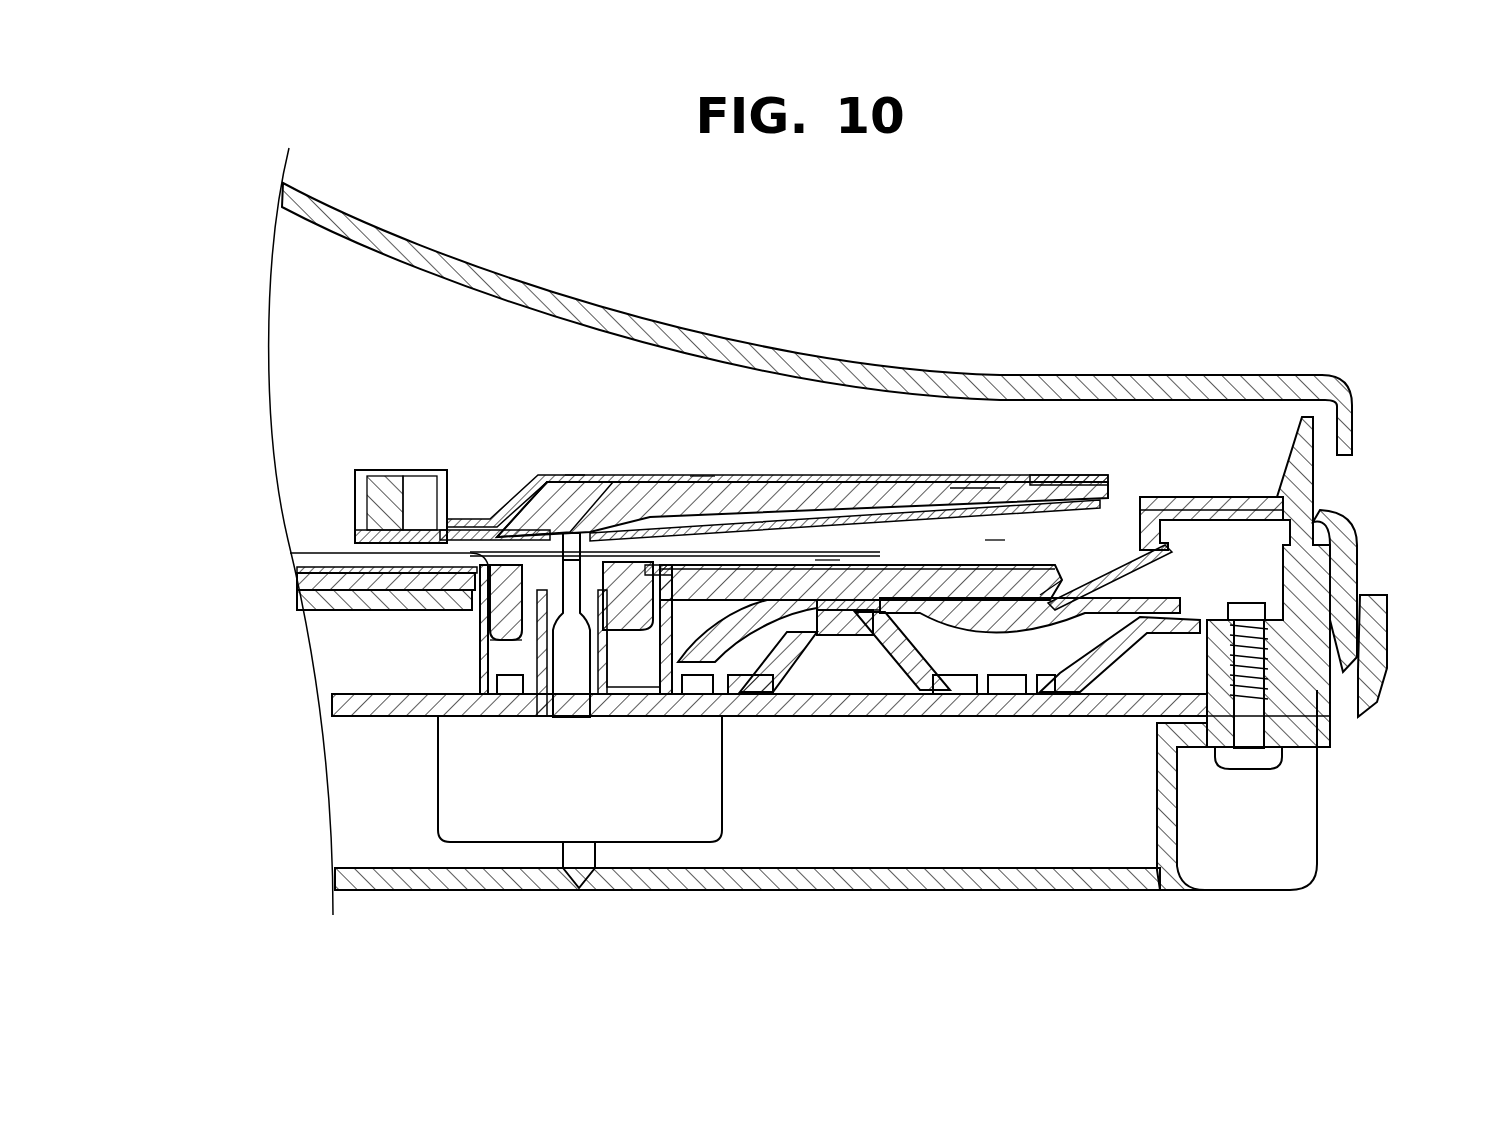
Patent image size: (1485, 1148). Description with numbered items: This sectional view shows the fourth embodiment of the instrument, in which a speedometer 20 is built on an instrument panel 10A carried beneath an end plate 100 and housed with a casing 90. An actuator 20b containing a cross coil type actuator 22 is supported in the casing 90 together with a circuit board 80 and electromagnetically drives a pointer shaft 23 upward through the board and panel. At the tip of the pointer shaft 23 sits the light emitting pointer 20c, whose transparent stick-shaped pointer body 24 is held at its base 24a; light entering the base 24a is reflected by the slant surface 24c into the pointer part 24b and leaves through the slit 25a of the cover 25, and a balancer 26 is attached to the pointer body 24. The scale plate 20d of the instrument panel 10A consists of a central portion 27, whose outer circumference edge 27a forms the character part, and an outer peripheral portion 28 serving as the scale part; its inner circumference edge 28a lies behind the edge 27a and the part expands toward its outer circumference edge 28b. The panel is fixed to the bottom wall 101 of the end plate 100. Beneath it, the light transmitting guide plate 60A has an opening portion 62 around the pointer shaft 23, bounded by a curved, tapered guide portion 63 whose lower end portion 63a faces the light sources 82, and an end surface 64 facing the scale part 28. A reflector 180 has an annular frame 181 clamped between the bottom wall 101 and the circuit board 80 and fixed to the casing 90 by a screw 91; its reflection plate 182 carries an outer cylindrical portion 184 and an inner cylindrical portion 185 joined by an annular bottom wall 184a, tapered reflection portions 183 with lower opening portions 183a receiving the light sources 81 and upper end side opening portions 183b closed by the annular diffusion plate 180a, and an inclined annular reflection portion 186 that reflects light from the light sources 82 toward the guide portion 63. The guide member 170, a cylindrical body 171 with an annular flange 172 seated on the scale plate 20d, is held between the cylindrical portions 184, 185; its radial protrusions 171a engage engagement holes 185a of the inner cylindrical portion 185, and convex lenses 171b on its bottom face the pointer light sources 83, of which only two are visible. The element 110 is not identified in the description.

The housing 110 is at (385, 205).
The light emitting pointer 20c is at (702, 470).
The instrument panel 10A is at (993, 535).
The speedometer 20 is at (575, 470).
The balancer 26 is at (383, 472).
The pointer shaft 23 is at (518, 522).
The slant surface 24c is at (556, 528).
The pointer body 24 is at (770, 497).
The base 24a is at (560, 474).
The pointer part 24b is at (975, 495).
The cover 25 is at (614, 530).
The slit 25a is at (1032, 480).
The engagement holes 185a is at (585, 535).
The annular flange 172 is at (660, 557).
The opening portion 62 is at (540, 557).
The guide plate 60A is at (340, 593).
The reflection plate 182 is at (377, 613).
The cylindrical body 171 is at (487, 647).
The guide member 170 is at (340, 715).
The convex lenses 171b is at (478, 680).
The wall upper portion 171a is at (548, 700).
The outer cylindrical portion 184 is at (507, 690).
The light sources 83 is at (540, 716).
The inner cylindrical portion 185 is at (560, 718).
The annular bottom wall 184a is at (648, 690).
The guide portion 63 is at (785, 660).
The lower end portion 63a is at (713, 650).
The light sources 82 is at (698, 690).
The central portion 27 is at (893, 563).
The outer circumference edge 27a is at (1050, 595).
The scale plate 20d is at (826, 555).
The reflection portions 183 is at (900, 668).
The annular reflection portion 186 is at (790, 665).
The opening portion 183a is at (963, 687).
The upper end side opening portions 183b is at (853, 640).
The annular diffusion plate 180a is at (950, 625).
The light sources 81 is at (1013, 694).
The end surface 64 is at (1047, 625).
The circuit board 80 is at (1110, 727).
The outer peripheral portion 28 is at (1132, 543).
The outer circumference edge 28b is at (1140, 540).
The inner circumference edge 28a is at (1062, 600).
The end plate 100 is at (1325, 500).
The bottom wall 101 is at (1235, 497).
The annular frame 181 is at (1277, 648).
The reflector 180 is at (1142, 665).
The screw 91 is at (1255, 728).
The cross coil type actuator 22 is at (687, 815).
The casing 90 is at (1175, 893).
The actuator 20b is at (727, 823).